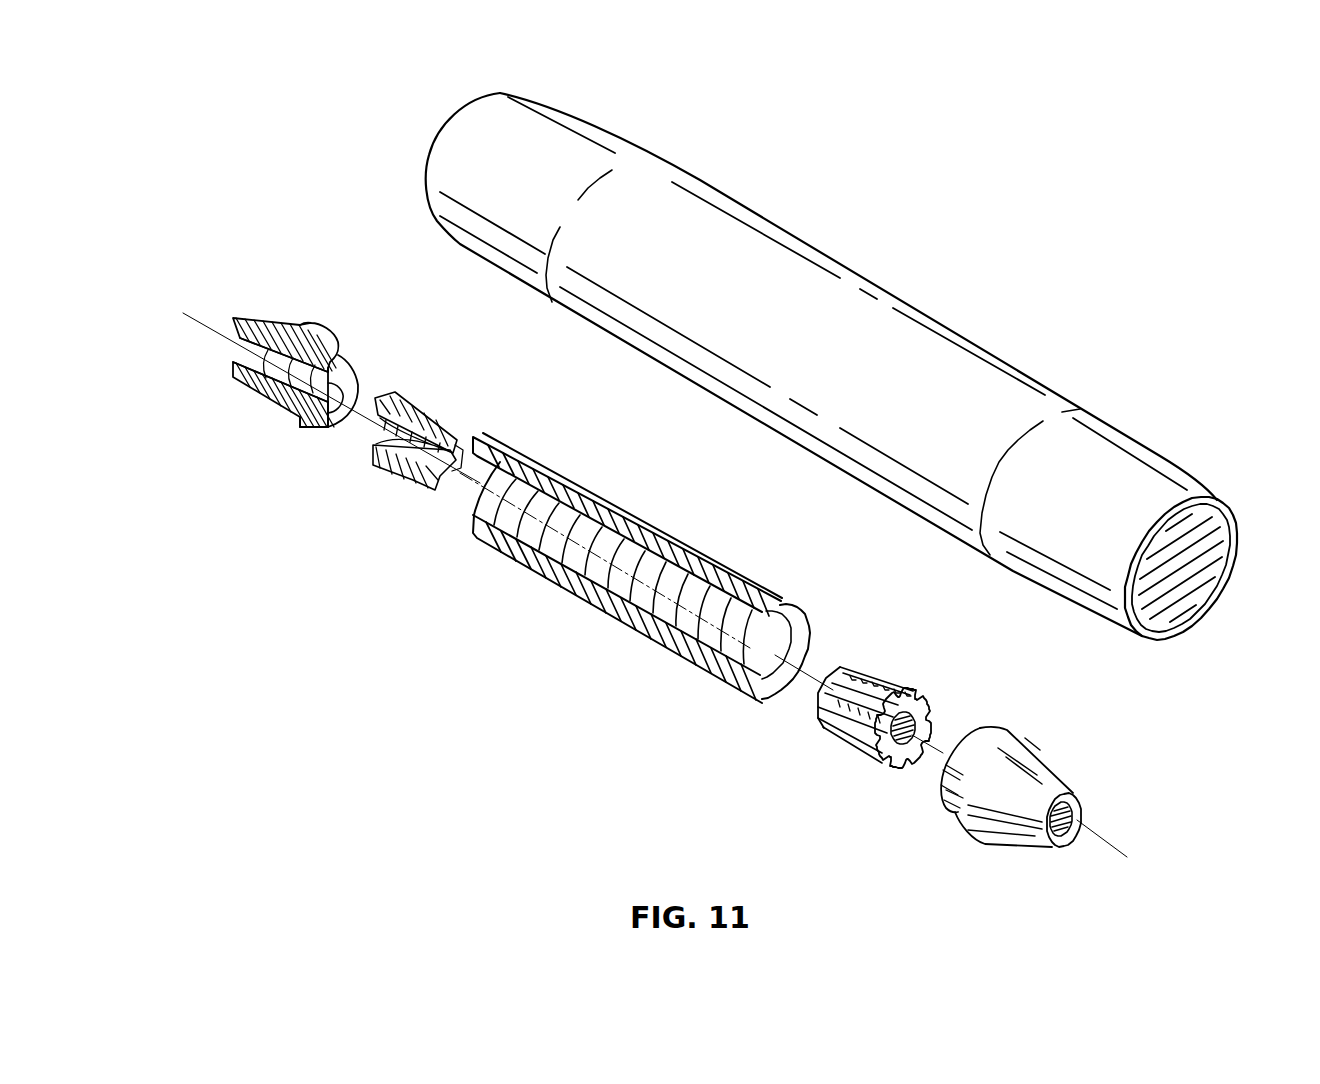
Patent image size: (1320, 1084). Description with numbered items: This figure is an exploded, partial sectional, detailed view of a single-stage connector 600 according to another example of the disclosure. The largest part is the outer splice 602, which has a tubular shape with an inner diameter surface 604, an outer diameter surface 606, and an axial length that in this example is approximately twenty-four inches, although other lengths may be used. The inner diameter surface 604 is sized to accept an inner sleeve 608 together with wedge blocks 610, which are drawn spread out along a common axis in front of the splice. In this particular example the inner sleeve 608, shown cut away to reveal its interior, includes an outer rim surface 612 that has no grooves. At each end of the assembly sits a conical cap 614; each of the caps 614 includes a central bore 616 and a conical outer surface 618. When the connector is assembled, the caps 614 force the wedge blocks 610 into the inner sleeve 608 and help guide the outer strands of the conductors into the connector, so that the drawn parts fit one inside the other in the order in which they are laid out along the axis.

The single-stage connector 600 is at (1125, 155).
The outer splice 602 is at (884, 209).
The inner diameter surface 604 is at (1142, 594).
The outer diameter surface 606 is at (650, 187).
The inner sleeve 608 is at (641, 563).
The wedge blocks 610 is at (368, 507).
The outer rim surface 612 is at (562, 477).
The conical caps 614 is at (249, 438).
The central bores 616 is at (255, 350).
The conical outer surfaces 618 is at (283, 318).